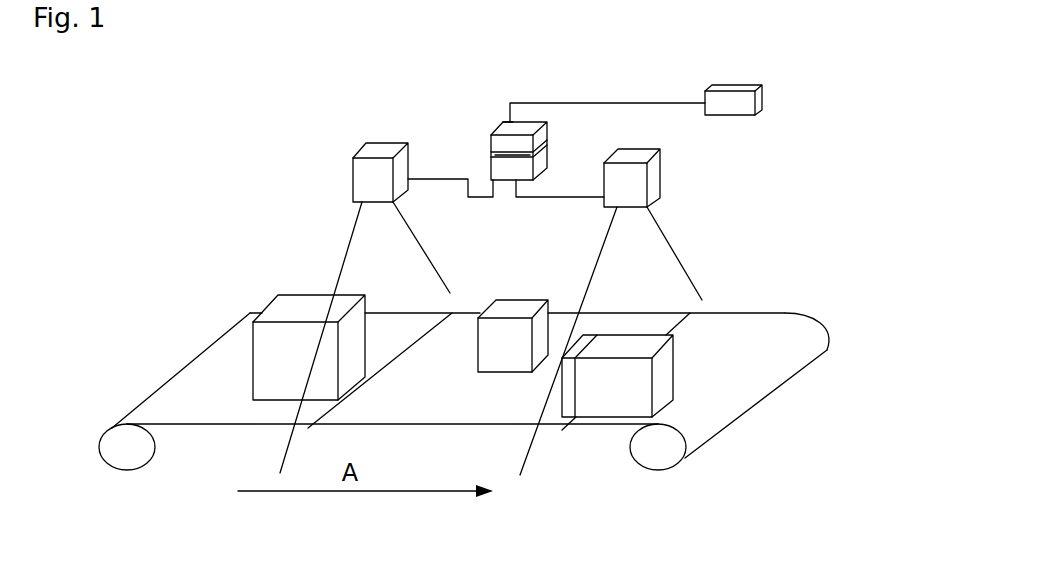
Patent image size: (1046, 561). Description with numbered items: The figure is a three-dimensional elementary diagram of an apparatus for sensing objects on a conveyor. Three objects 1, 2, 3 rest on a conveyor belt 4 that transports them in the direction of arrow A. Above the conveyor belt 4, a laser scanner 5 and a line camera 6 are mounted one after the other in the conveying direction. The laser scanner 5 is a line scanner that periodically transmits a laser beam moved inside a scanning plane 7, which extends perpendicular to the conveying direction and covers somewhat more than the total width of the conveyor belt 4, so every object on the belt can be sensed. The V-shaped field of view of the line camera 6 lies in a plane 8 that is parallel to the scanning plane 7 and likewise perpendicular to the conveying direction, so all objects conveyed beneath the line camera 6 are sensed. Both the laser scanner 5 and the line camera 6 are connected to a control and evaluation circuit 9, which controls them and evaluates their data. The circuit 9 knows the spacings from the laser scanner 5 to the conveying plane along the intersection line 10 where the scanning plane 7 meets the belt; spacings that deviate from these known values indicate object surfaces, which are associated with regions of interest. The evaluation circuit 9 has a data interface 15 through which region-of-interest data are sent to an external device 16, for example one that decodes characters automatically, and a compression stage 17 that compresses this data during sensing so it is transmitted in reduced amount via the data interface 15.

The object 1 is at (632, 380).
The object 2 is at (502, 355).
The object 3 is at (277, 367).
The conveyor belt 4 is at (785, 319).
The laser scanner 5 is at (373, 180).
The line camera 6 is at (634, 181).
The scanning plane 7 is at (408, 270).
The plane 8 is at (655, 262).
The control and evaluation circuit 9 is at (551, 140).
The intersection line 10 is at (391, 362).
The data interface 15 is at (515, 121).
The external device 16 is at (741, 108).
The compression stage 17 is at (500, 152).